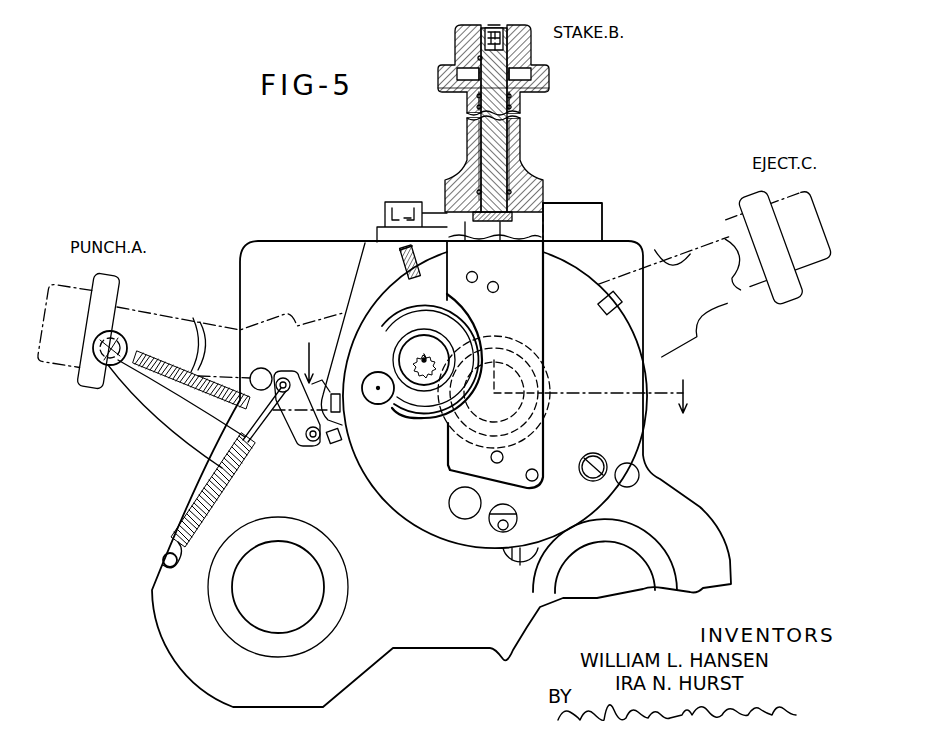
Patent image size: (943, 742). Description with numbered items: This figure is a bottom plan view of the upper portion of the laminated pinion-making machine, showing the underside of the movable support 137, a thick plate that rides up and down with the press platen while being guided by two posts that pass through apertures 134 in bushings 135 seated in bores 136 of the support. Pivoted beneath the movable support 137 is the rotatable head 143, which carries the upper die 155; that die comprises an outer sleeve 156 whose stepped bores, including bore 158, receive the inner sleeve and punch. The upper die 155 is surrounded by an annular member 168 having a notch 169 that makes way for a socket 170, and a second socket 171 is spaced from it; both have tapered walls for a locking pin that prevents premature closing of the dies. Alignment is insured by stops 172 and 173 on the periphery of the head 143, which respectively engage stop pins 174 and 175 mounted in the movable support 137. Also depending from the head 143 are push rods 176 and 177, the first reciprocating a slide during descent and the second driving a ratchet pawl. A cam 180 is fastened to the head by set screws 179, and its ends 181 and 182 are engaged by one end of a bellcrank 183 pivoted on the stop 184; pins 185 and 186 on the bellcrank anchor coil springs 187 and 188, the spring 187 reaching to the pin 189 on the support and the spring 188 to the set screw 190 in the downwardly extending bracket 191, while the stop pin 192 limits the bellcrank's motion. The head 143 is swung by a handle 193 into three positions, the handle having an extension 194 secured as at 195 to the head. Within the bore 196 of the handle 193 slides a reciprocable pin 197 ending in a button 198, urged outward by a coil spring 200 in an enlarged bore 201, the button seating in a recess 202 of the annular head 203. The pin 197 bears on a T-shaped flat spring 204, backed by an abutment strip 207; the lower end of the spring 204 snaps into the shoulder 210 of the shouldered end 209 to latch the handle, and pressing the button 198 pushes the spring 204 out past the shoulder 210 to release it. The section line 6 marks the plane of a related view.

The section line 6- 6 is at (496, 378).
The apertures 134 is at (316, 580).
The bushings 135 is at (647, 541).
The bores 136 is at (337, 612).
The movable support 137 is at (190, 662).
The rotatable head 143 is at (628, 381).
The upper die 155 is at (428, 408).
The outer sleeve 156 is at (480, 55).
The bore 158 is at (423, 356).
The annular member 168 is at (408, 309).
The notch 169 is at (378, 373).
The socket 170 is at (378, 404).
The second socket 171 is at (459, 499).
The stop 172 is at (336, 444).
The stop 173 is at (621, 300).
The stop pin 174 is at (512, 548).
The stop pin 175 is at (636, 481).
The push rod 176 is at (512, 513).
The push rod 177 is at (497, 27).
The set screws 179 is at (404, 262).
The cam 180 is at (366, 299).
The end of cam 181 is at (334, 412).
The end of cam 182 is at (404, 270).
The bellcrank 183 is at (302, 392).
The stop 184 is at (290, 440).
The pin 185 is at (280, 379).
The pin 186 is at (313, 442).
The coil spring 187 is at (210, 480).
The coil spring 188 is at (168, 362).
The pin 189 is at (163, 557).
The set screw 190 is at (120, 338).
The bracket 191 is at (140, 397).
The stop pin 192 is at (250, 377).
The handle 193 is at (534, 165).
The extension 194 is at (537, 322).
The securing means 195 is at (494, 292).
The bore 196 is at (480, 182).
The reciprocable pin 197 is at (480, 163).
The button 198 is at (532, 32).
The coil spring 200 is at (470, 100).
The enlarged bore 201 is at (470, 121).
The recess 202 is at (549, 86).
The annular head 203 is at (549, 70).
The T-shaped flat spring 204 is at (492, 223).
The abutment strip 207 is at (602, 223).
The shouldered end 209 is at (469, 223).
The shoulder 210 is at (476, 216).